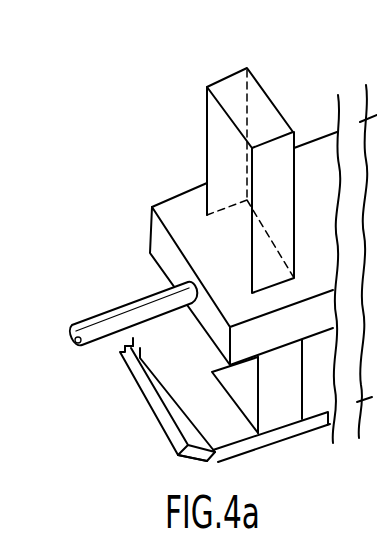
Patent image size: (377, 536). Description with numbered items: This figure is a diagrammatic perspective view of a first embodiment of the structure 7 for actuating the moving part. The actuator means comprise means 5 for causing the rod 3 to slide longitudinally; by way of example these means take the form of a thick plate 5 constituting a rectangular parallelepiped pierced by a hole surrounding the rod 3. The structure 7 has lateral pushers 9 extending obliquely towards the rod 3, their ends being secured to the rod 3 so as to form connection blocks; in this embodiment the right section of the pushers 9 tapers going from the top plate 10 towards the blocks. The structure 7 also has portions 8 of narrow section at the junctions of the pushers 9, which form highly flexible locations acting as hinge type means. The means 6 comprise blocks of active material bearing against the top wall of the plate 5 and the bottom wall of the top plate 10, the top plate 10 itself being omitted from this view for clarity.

The rod 3 is at (140, 304).
The thick plate 5 is at (181, 208).
The means comprising blocks of active materials 6 is at (212, 125).
The structure 7 is at (120, 385).
The portions of narrow section 8 is at (111, 357).
The lateral pushers 9 is at (158, 418).
The top plate 10 is at (205, 400).